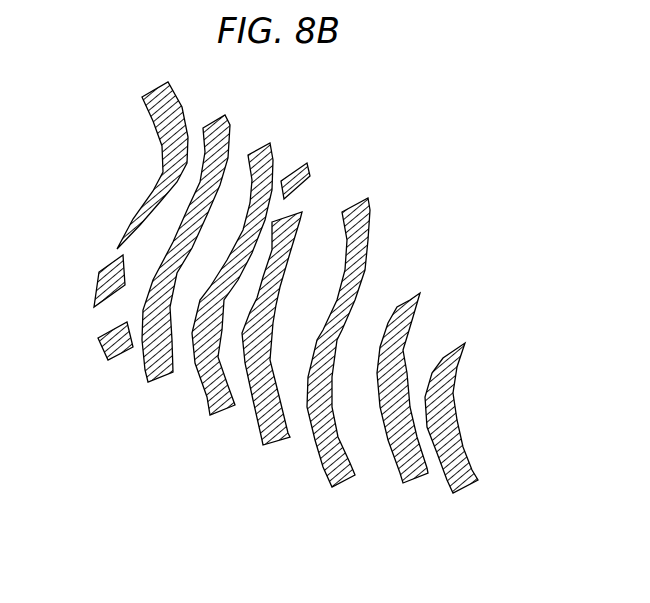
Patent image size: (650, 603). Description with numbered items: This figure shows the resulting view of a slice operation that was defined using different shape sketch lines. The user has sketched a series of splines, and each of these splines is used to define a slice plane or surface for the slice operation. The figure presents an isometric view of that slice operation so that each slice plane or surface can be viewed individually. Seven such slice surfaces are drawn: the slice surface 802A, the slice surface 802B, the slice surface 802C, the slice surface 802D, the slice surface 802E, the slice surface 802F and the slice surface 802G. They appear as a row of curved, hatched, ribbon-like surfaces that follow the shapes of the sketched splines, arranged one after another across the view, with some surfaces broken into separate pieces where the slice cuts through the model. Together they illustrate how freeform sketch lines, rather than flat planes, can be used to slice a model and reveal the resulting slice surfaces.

The spline 802A is at (104, 355).
The spline 802B is at (150, 383).
The spline 802C is at (208, 416).
The spline 802D is at (262, 447).
The spline 802E is at (332, 483).
The spline 802F is at (403, 481).
The spline 802G is at (450, 492).